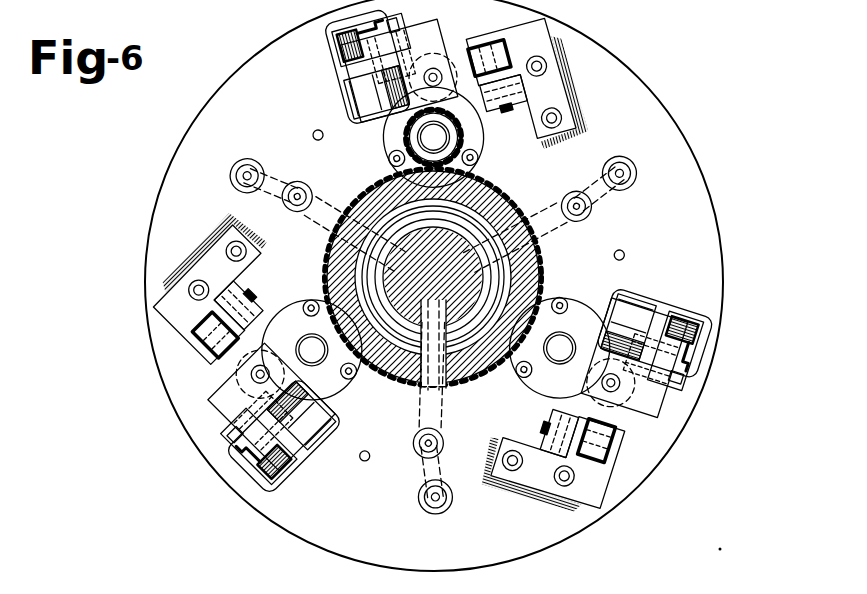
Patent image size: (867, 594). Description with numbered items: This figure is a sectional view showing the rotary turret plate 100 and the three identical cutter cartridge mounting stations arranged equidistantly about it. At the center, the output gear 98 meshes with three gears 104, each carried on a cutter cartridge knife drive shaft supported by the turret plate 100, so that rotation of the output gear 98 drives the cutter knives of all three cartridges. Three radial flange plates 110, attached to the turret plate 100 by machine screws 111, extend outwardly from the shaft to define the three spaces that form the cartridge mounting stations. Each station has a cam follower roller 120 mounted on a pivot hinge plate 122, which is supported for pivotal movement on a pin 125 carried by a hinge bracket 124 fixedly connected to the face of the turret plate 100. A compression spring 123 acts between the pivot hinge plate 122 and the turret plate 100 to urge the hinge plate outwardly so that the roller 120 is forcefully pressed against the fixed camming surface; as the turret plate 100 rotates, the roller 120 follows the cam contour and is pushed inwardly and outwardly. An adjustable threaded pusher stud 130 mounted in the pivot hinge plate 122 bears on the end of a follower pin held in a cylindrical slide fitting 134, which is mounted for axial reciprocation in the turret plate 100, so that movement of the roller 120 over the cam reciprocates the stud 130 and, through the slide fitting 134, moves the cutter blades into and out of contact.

The output gear 98 is at (530, 270).
The rotary turret plate 100 is at (686, 117).
The gear 104 is at (402, 138).
The radial flange plate 110 is at (268, 196).
The machine screw 111 is at (248, 172).
The cam follower roller 120 is at (360, 100).
The pivot hinge plate 122 is at (352, 46).
The compression spring 123 is at (345, 76).
The hinge bracket 124 is at (570, 84).
The pin 125 is at (505, 112).
The adjustable threaded pusher stud 130 is at (230, 378).
The cylindrical slide fitting 134 is at (495, 88).